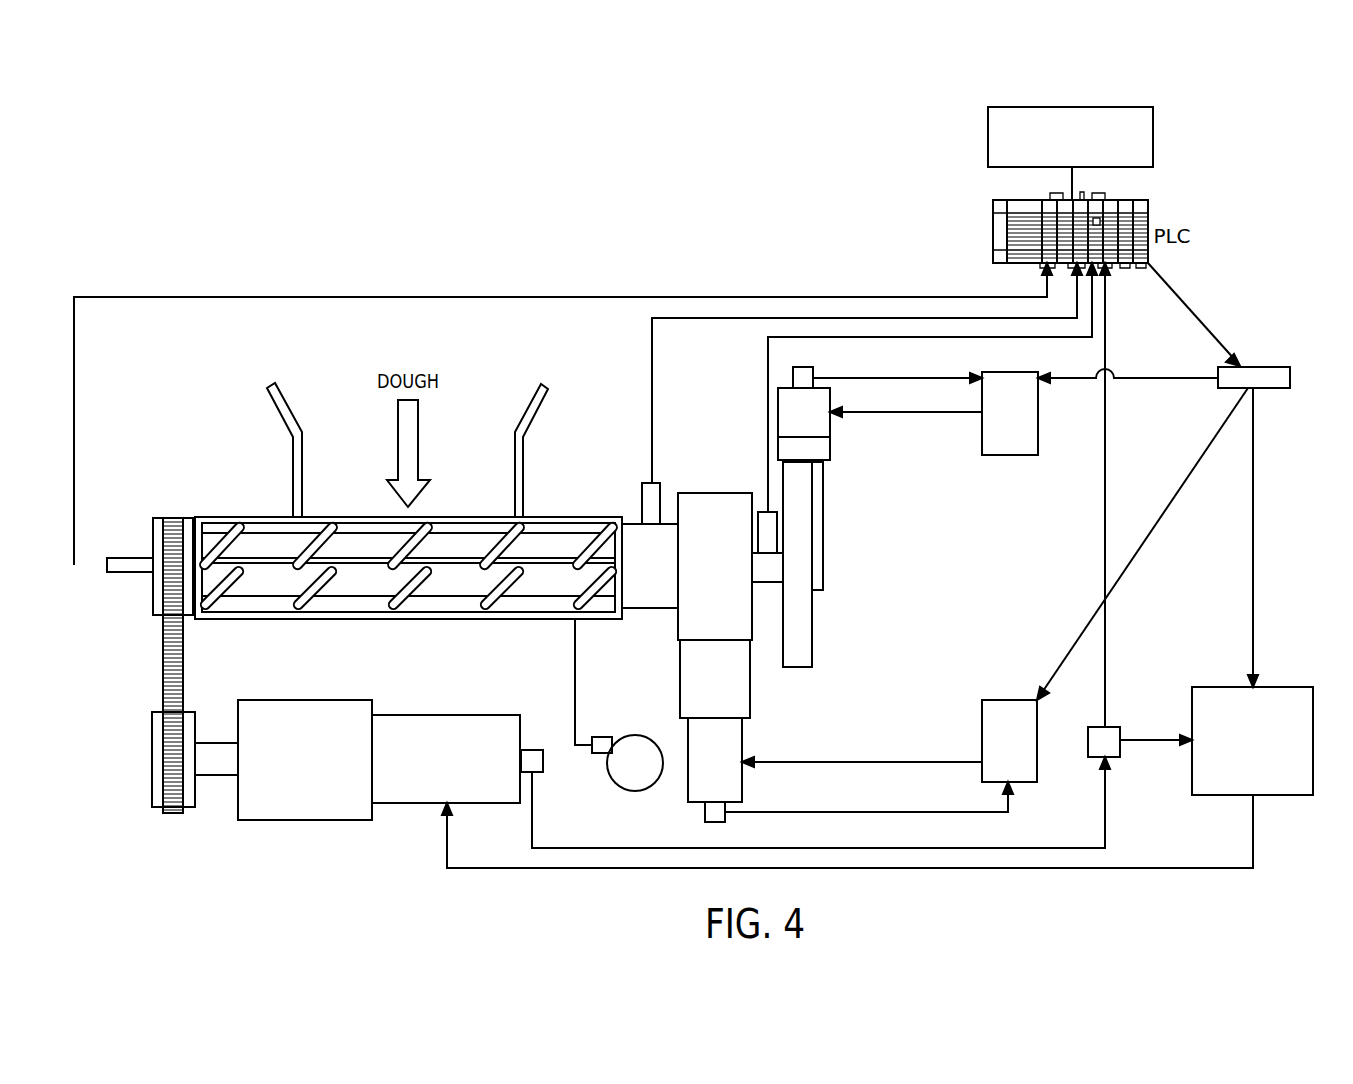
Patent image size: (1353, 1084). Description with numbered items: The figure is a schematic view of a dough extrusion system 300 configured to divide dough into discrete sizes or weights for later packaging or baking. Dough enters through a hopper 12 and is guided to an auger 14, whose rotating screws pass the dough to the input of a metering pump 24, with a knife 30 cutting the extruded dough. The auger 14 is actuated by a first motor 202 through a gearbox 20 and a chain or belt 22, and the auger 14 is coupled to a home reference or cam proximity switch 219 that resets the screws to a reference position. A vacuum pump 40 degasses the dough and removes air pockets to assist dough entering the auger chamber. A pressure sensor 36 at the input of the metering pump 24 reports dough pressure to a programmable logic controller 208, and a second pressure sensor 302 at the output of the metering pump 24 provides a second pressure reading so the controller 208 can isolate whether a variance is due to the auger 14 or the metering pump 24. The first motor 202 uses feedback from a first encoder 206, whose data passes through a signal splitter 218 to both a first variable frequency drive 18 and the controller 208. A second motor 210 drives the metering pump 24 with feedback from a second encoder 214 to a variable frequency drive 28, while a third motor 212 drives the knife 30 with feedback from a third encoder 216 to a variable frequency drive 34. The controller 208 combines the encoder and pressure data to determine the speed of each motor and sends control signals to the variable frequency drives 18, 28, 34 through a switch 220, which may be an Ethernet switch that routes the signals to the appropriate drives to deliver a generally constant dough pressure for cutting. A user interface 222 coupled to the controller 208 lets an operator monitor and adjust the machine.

The dough extrusion system 300 is at (580, 210).
The user interface 222 is at (990, 113).
The controller 208 is at (992, 225).
The hopper 12 is at (258, 373).
The auger 14 is at (385, 532).
The cam proximity switch 219 is at (124, 566).
The chain or belt 22 is at (172, 648).
The gearbox 20 is at (287, 790).
The first motor 202 is at (453, 783).
The first encoder 206 is at (540, 760).
The vacuum pump 40 is at (632, 748).
The pressure sensor 36 is at (650, 500).
The metering pump 24 is at (742, 497).
The second pressure sensor 302 is at (768, 514).
The knife 30 is at (843, 547).
The third motor 212 is at (820, 420).
The third encoder 216 is at (812, 375).
The variable frequency drive 34 is at (1000, 440).
The switch 220 is at (1265, 385).
The second motor 210 is at (732, 783).
The second encoder 214 is at (705, 812).
The variable frequency drive 28 is at (1010, 712).
The signal splitter 218 is at (1108, 745).
The first variable frequency drive 18 is at (1245, 700).